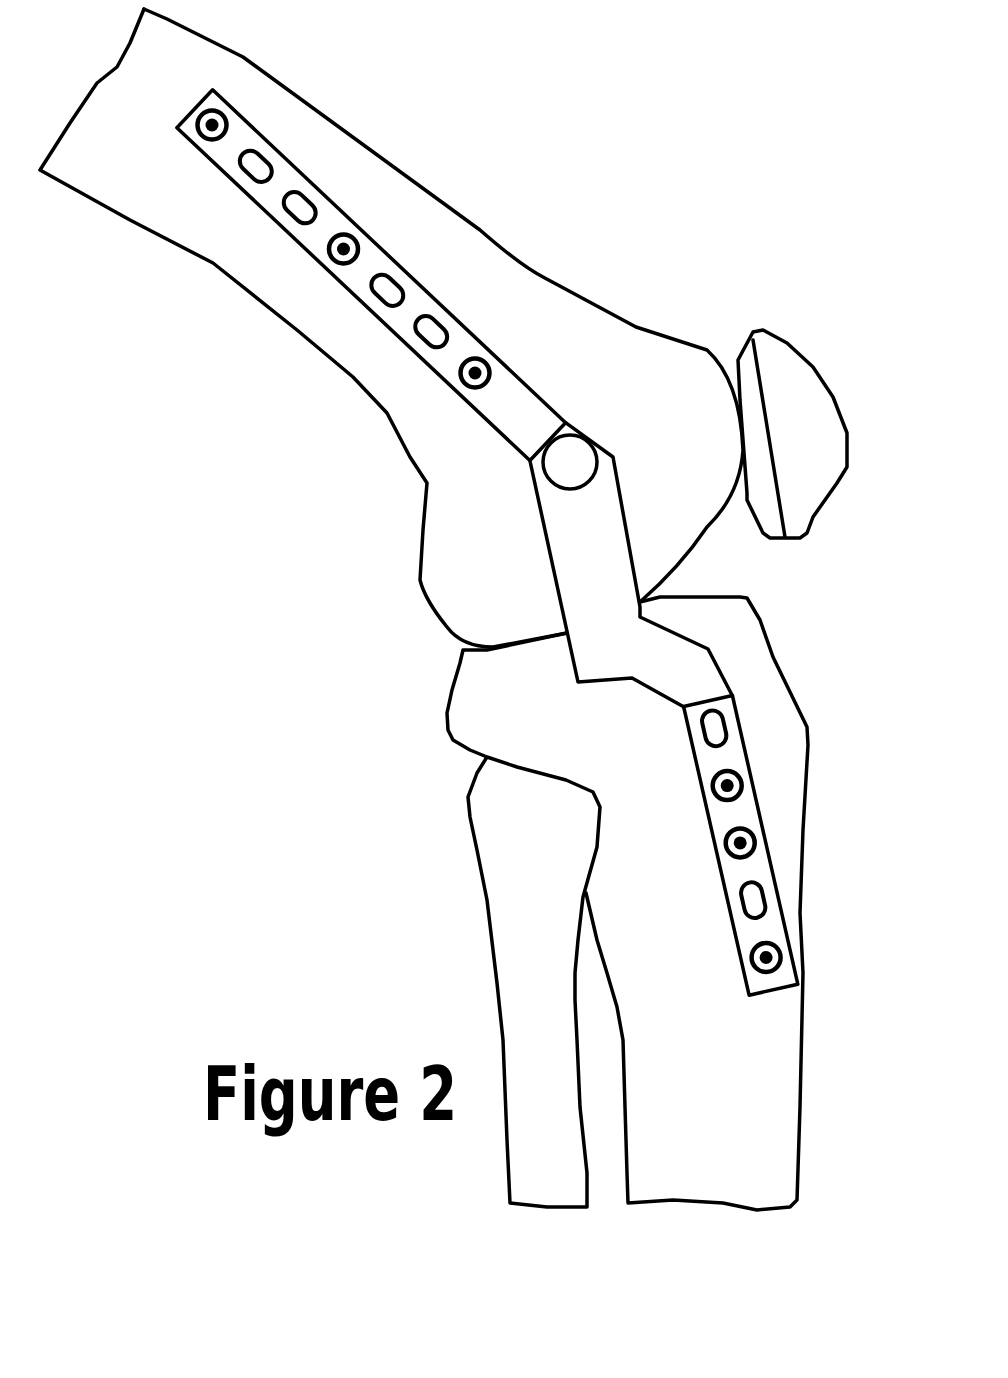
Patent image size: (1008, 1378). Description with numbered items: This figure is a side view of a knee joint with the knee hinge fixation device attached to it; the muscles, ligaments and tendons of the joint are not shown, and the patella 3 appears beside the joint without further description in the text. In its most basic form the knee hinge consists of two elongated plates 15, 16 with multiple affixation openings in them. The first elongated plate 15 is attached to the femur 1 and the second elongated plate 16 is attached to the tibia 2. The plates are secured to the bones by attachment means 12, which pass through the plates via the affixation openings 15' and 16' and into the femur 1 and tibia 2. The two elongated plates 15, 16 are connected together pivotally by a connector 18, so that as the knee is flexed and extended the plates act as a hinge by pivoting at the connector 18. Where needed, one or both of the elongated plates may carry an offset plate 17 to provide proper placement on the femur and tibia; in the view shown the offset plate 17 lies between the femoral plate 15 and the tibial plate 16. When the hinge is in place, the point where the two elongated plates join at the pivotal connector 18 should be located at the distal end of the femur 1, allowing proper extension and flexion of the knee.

The femur 1 is at (391, 328).
The tibia 2 is at (627, 903).
The patella 3 is at (792, 434).
The attachment means 12 is at (475, 360).
The elongated plate 15 is at (371, 314).
The affixation openings 15' is at (291, 310).
The elongated plate 16 is at (540, 846).
The affixation openings 16' is at (510, 851).
The offset plate 17 is at (582, 593).
The connector 18 is at (580, 463).